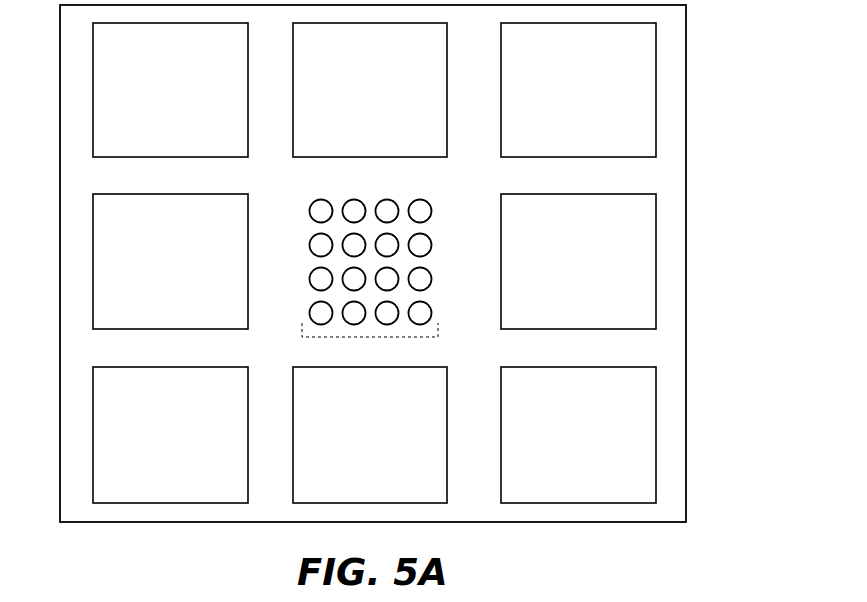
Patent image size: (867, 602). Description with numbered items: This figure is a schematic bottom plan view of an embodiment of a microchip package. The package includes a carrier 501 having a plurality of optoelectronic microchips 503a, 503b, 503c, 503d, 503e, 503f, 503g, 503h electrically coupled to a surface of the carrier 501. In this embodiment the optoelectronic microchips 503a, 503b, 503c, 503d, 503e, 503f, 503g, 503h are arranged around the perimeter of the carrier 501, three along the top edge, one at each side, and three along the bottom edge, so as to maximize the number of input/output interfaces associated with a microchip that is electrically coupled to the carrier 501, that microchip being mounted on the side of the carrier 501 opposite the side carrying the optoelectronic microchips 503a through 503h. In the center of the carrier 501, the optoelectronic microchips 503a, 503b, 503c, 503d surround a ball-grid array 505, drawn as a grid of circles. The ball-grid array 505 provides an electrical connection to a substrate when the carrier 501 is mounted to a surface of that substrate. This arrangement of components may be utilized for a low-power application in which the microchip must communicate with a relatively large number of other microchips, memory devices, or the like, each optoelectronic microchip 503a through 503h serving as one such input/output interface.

The carrier 501 is at (686, 262).
The optoelectronic microchip 503a is at (170, 90).
The optoelectronic microchip 503b is at (370, 90).
The optoelectronic microchip 503c is at (578, 90).
The optoelectronic microchip 503d is at (578, 261).
The optoelectronic microchip 503e is at (578, 435).
The optoelectronic microchip 503f is at (370, 435).
The optoelectronic microchip 503g is at (170, 435).
The optoelectronic microchip 503h is at (170, 261).
The ball-grid array 505 is at (313, 338).